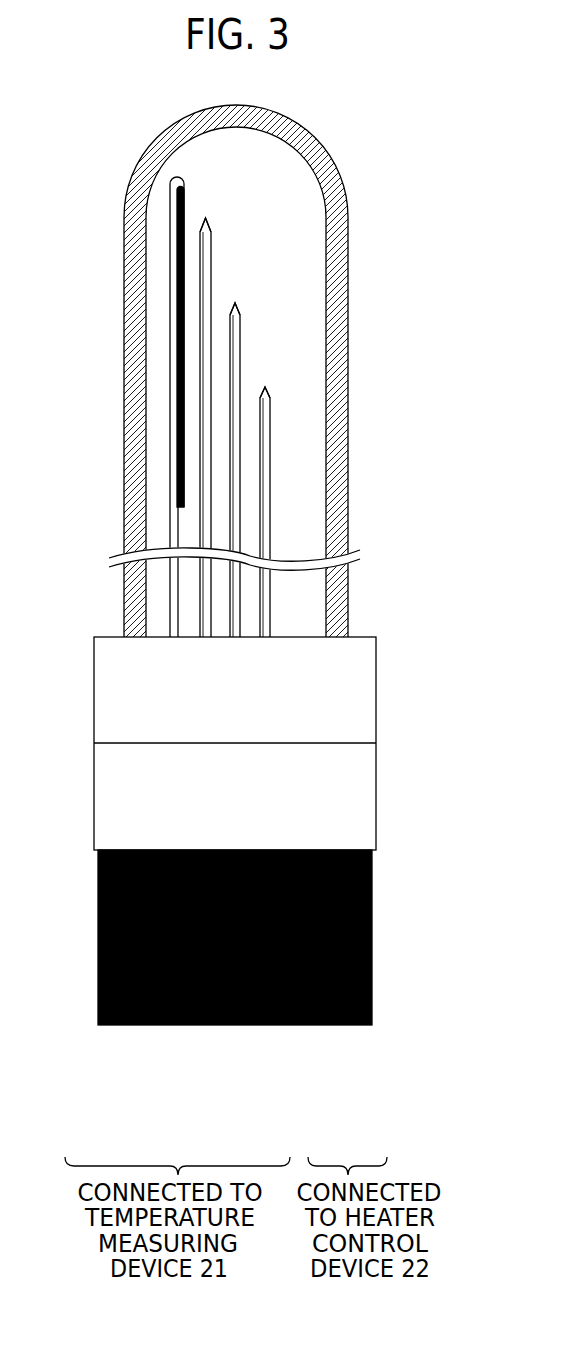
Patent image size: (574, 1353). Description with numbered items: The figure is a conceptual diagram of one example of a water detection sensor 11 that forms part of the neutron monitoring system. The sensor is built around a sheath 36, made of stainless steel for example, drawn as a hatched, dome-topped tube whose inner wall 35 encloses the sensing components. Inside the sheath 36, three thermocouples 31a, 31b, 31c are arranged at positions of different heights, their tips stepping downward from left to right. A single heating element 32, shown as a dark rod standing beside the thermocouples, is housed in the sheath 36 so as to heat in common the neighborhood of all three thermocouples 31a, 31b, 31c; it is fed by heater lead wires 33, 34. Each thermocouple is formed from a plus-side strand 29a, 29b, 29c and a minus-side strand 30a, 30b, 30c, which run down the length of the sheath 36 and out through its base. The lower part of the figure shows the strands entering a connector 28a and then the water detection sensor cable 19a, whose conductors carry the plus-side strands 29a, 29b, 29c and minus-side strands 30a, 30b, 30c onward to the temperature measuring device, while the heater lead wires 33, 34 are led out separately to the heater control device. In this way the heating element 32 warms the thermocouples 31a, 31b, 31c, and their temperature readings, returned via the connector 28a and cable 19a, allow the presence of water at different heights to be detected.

The water detection sensor 11 is at (317, 142).
The sheath 36 is at (342, 170).
The inner surface of protective tube 35 is at (305, 243).
The heating element 32 is at (177, 203).
The heater lead wire 33 is at (168, 365).
The heater lead wire 34 is at (178, 535).
The plus-side strand 29a is at (203, 243).
The minus-side strand 30a is at (208, 268).
The thermocouple 31a is at (205, 220).
The plus-side strand 29b is at (233, 328).
The minus-side strand 30b is at (238, 353).
The thermocouple 31b is at (236, 305).
The plus-side strand 29c is at (262, 408).
The minus-side strand 30c is at (270, 428).
The thermocouple 31c is at (265, 388).
The connector 28a is at (376, 700).
The water detection sensor cable 19a is at (372, 930).